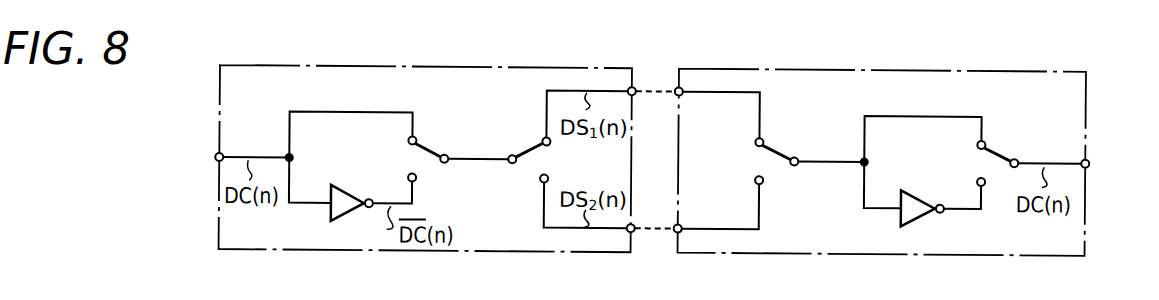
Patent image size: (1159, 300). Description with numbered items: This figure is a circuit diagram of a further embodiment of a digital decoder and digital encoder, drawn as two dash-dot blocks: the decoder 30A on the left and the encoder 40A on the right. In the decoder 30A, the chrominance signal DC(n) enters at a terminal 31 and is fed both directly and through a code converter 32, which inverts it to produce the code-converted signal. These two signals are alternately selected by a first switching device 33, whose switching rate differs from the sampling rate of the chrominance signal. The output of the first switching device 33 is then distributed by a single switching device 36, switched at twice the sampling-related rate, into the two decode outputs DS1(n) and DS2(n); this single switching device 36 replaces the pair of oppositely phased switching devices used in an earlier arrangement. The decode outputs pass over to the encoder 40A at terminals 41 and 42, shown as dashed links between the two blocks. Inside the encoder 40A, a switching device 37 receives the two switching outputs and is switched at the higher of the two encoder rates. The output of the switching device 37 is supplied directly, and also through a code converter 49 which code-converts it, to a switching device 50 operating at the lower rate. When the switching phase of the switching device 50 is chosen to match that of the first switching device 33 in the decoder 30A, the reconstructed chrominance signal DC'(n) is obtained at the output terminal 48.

The decoder 30A is at (527, 54).
The encoder 40A is at (947, 55).
The terminal 31 is at (217, 153).
The code converter 32 is at (345, 185).
The first switching device 33 is at (431, 150).
The single switching device 36 is at (527, 148).
The switching device 37 is at (784, 150).
The terminal 41 is at (676, 92).
The terminal 42 is at (676, 221).
The output terminal 48 is at (1089, 154).
The code converter 49 is at (922, 212).
The switching device 50 is at (1027, 133).